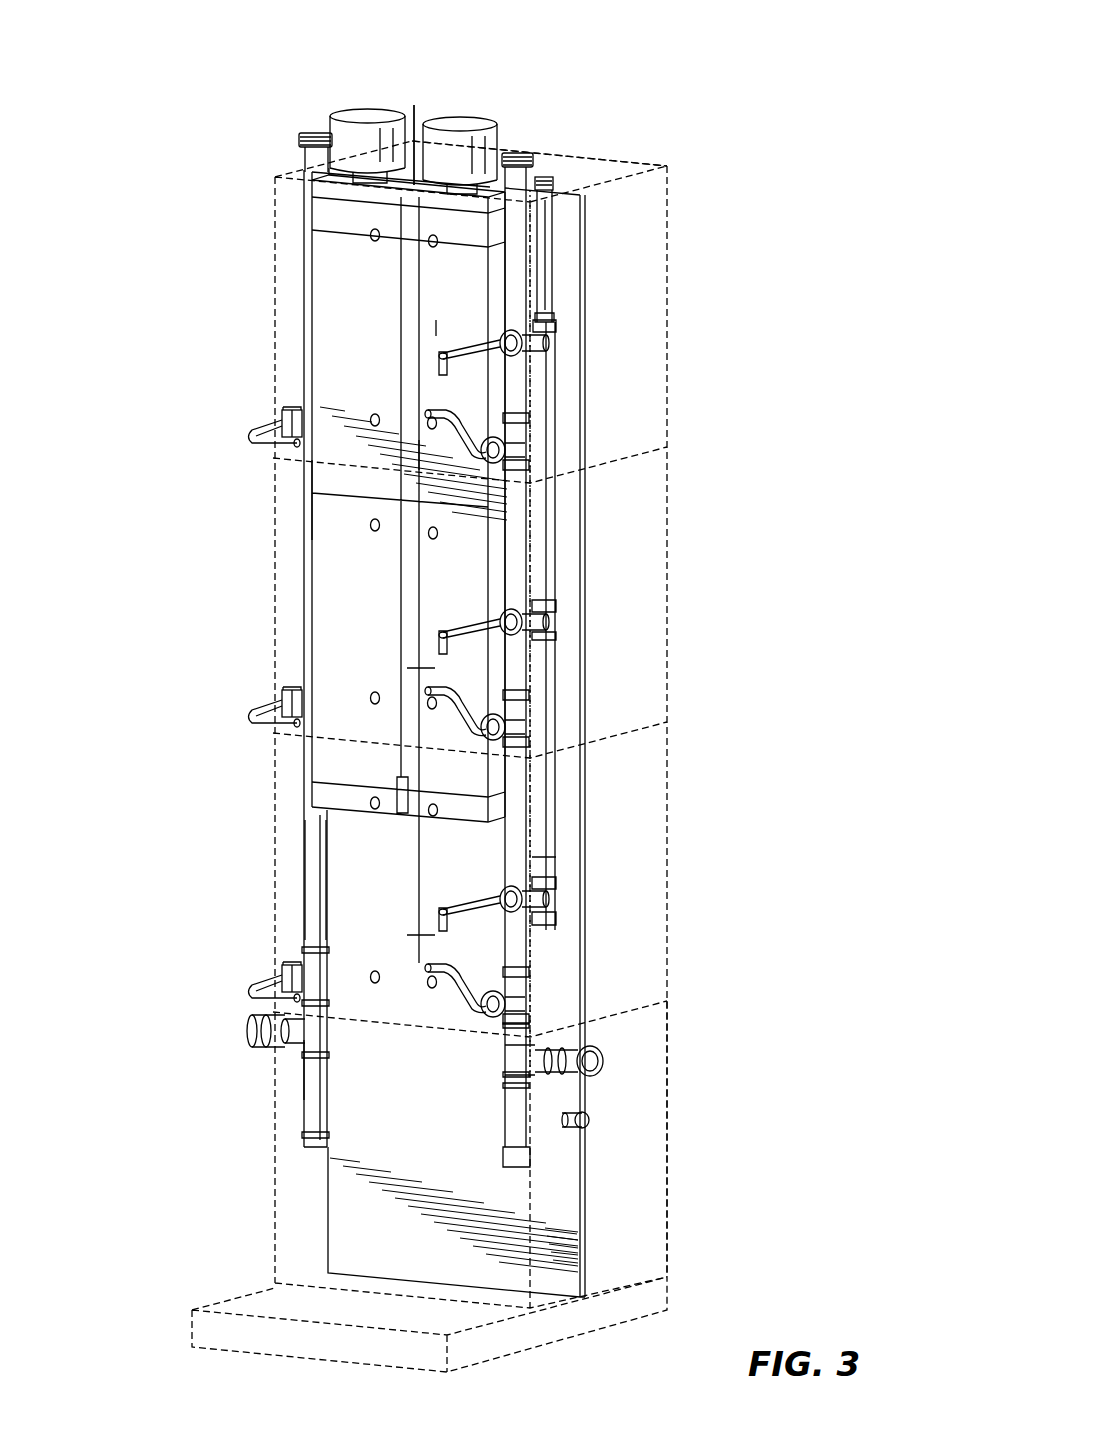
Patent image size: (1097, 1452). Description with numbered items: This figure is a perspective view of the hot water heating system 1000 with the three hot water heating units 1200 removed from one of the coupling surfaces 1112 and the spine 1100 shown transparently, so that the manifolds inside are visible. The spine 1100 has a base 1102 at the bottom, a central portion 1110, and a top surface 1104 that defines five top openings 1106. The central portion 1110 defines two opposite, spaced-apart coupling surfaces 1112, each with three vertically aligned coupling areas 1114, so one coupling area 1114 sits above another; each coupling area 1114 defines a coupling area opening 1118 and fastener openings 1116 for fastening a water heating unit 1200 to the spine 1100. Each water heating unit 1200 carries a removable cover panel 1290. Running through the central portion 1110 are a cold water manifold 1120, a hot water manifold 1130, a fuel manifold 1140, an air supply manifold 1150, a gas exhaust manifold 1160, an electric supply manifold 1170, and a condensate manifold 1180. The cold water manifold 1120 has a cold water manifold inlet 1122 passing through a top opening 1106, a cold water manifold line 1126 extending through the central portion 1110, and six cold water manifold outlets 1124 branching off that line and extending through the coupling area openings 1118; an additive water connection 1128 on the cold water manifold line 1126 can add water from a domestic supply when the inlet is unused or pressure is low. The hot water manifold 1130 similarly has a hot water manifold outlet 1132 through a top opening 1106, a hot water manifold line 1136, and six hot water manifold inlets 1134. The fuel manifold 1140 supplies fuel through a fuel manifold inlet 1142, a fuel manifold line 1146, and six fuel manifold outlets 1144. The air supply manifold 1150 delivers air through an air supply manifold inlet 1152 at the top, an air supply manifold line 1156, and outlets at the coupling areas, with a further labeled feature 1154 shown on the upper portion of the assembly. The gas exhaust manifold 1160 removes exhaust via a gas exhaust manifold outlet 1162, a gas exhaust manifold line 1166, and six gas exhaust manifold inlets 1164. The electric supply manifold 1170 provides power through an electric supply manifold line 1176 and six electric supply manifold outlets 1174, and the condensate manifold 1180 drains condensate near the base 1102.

The hot water heating system 1000 is at (797, 90).
The spine 1100 is at (555, 1335).
The base 1102 is at (695, 1198).
The top surface 1104 is at (633, 148).
The top openings 1106 is at (313, 171).
The central portion 1110 is at (255, 840).
The coupling surfaces 1112 is at (332, 835).
The coupling areas 1114 is at (345, 884).
The fastener openings 1116 is at (372, 975).
The coupling area opening 1118 is at (282, 414).
The cold water manifold 1120 is at (548, 150).
The cold water manifold inlet 1122 is at (505, 150).
The cold water manifold outlets 1124 is at (440, 668).
The cold water manifold line 1126 is at (497, 512).
The additive water connection 1128 is at (605, 1055).
The hot water manifold 1130 is at (292, 122).
The hot water manifold outlet 1132 is at (320, 132).
The hot water manifold inlets 1134 is at (282, 700).
The hot water manifold line 1136 is at (325, 508).
The fuel manifold 1140 is at (556, 250).
The fuel manifold inlet 1142 is at (557, 178).
The fuel manifold outlets 1144 is at (437, 323).
The fuel manifold line 1146 is at (548, 690).
The air supply manifold 1150 is at (322, 99).
The air supply manifold inlet 1152 is at (347, 112).
The upper panel 1154 is at (330, 212).
The air supply manifold line 1156 is at (325, 300).
The gas exhaust manifold 1160 is at (477, 106).
The gas exhaust manifold outlet 1162 is at (462, 123).
The gas exhaust manifold inlets 1164 is at (348, 512).
The gas exhaust manifold line 1166 is at (437, 452).
The electric supply manifold 1170 is at (374, 112).
The electric supply manifold outlets 1174 is at (430, 395).
The electric supply manifold line 1176 is at (418, 587).
The condensate manifold 1180 is at (603, 1121).
The water heating units 1200 is at (690, 836).
The cover panel 1290 is at (665, 790).